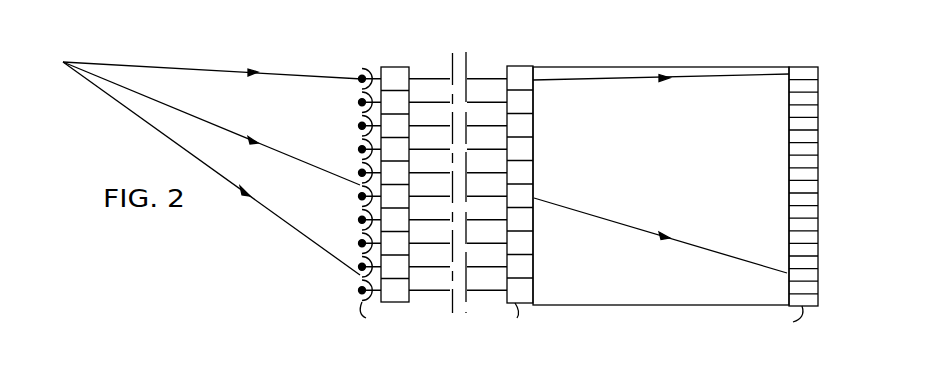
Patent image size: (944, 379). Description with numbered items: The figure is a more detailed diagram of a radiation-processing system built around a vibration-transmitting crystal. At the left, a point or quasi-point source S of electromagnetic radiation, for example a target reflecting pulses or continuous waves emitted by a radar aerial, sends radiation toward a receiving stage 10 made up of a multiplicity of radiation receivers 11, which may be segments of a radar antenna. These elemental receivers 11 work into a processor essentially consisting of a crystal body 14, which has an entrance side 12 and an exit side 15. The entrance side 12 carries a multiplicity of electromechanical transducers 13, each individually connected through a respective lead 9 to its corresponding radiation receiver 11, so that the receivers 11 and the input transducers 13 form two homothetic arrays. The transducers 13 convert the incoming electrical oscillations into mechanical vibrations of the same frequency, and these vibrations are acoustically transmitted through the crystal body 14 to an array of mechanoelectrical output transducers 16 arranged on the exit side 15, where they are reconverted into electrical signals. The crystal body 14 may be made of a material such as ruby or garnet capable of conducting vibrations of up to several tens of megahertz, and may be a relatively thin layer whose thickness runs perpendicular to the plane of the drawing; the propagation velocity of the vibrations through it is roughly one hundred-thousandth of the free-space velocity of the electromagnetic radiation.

The source S is at (201, 159).
The leads 9 is at (473, 106).
The receiving stage 10 is at (381, 67).
The radiation receivers 11 is at (395, 108).
The entrance side 12 is at (507, 66).
The electromechanical transducers 13 is at (523, 108).
The crystal body 14 is at (621, 76).
The exit side 15 is at (790, 67).
The output transducers 16 is at (812, 90).